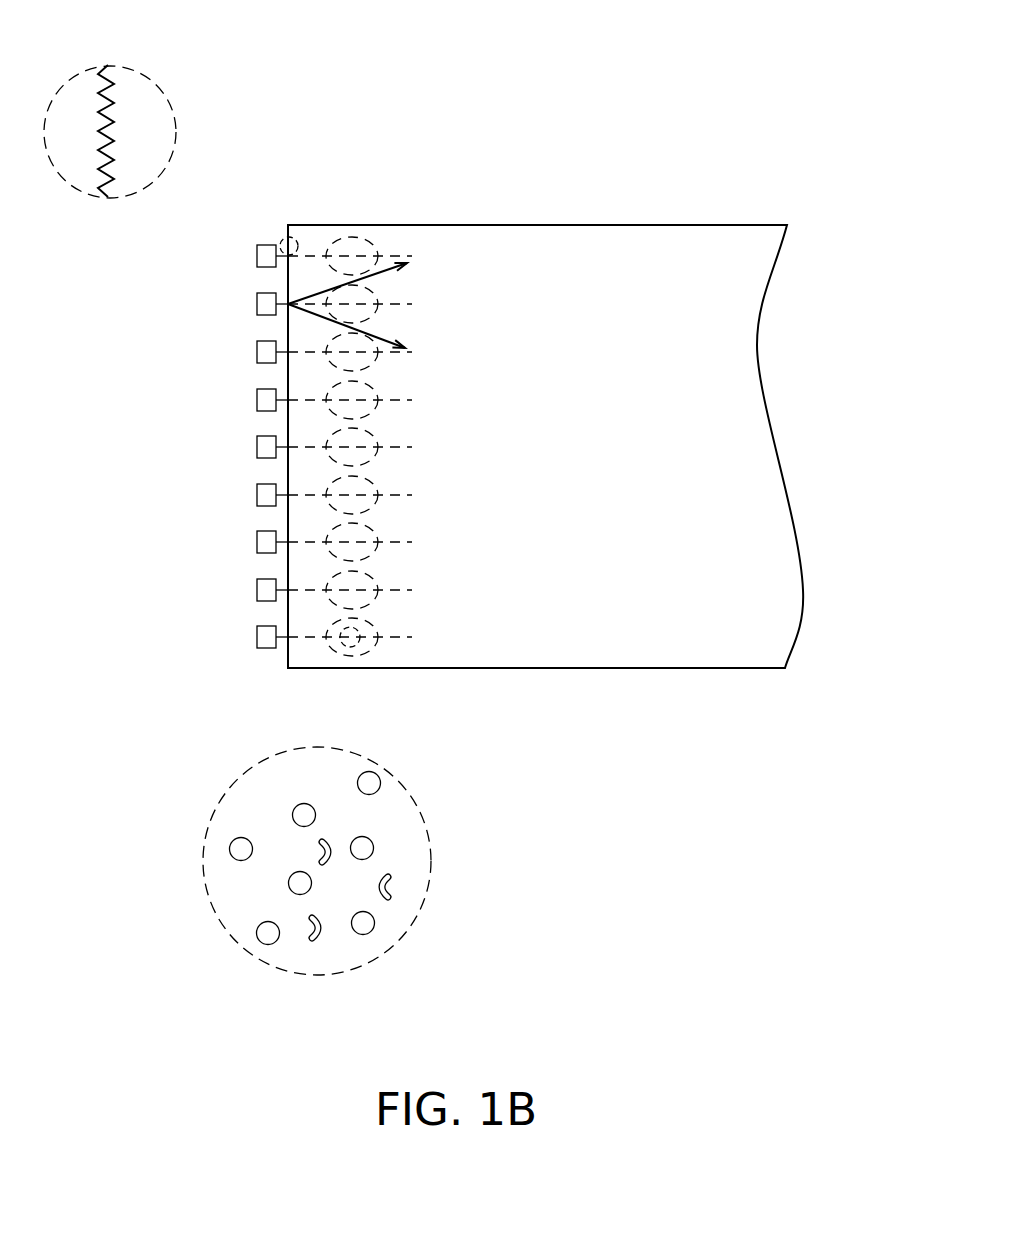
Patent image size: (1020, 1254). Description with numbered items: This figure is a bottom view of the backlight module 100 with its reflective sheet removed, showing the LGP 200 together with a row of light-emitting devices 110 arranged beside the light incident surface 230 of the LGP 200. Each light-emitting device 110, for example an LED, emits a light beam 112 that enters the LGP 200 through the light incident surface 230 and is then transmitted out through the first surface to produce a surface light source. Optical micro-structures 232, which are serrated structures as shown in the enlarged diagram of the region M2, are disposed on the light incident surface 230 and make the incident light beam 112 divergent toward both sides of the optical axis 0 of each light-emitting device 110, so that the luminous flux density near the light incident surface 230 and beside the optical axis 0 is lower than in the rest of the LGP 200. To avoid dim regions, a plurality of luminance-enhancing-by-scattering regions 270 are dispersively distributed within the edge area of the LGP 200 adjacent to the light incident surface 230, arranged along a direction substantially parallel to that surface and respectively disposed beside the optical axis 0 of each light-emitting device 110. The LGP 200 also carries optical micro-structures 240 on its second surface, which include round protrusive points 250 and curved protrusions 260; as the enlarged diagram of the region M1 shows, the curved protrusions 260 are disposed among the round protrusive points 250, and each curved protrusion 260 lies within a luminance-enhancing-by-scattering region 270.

The backlight module 100 is at (815, 796).
The light-emitting device 110 is at (263, 311).
The light beam 112 is at (378, 277).
The optical axis 0 is at (405, 300).
The LGP 200 is at (775, 617).
The light incident surface 230 is at (288, 277).
The optical micro-structures 232 is at (100, 93).
The optical micro-structures 240 is at (387, 899).
The round protrusive points 250 is at (366, 924).
The curved protrusions 260 is at (392, 887).
The luminance-enhancing-by-scattering regions 270 is at (350, 238).
The region M1 is at (360, 650).
The region M2 is at (283, 242).